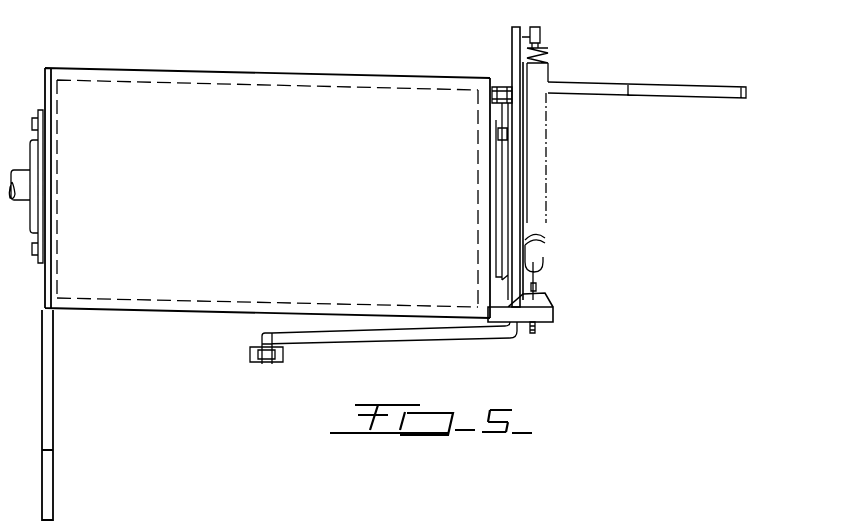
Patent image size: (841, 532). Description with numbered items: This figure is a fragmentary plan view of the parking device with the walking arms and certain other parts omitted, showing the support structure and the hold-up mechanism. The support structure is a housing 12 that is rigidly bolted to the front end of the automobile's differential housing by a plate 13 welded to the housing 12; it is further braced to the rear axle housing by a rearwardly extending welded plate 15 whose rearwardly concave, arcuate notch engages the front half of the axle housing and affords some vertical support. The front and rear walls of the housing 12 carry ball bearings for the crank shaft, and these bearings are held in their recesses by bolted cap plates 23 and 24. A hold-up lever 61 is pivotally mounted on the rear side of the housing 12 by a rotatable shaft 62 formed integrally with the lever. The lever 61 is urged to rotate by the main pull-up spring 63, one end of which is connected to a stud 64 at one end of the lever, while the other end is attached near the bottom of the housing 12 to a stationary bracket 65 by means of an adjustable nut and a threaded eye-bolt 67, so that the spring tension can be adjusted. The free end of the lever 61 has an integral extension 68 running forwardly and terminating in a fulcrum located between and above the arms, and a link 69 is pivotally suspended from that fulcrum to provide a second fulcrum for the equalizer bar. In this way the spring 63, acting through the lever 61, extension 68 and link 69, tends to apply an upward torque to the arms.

The housing 12 is at (322, 77).
The plate 13 is at (53, 398).
The rearwardly extending welded plate 15 is at (650, 70).
The bolted cap plate 23 is at (31, 213).
The bolted cap plate 24 is at (492, 278).
The hold-up lever 61 is at (513, 58).
The rotatable shaft 62 is at (503, 85).
The main pull-up spring 63 is at (545, 237).
The stud 64 is at (546, 40).
The stationary bracket 65 is at (552, 303).
The threaded eye-bolt 67 is at (535, 333).
The integral extension 68 is at (437, 343).
The link 69 is at (283, 355).